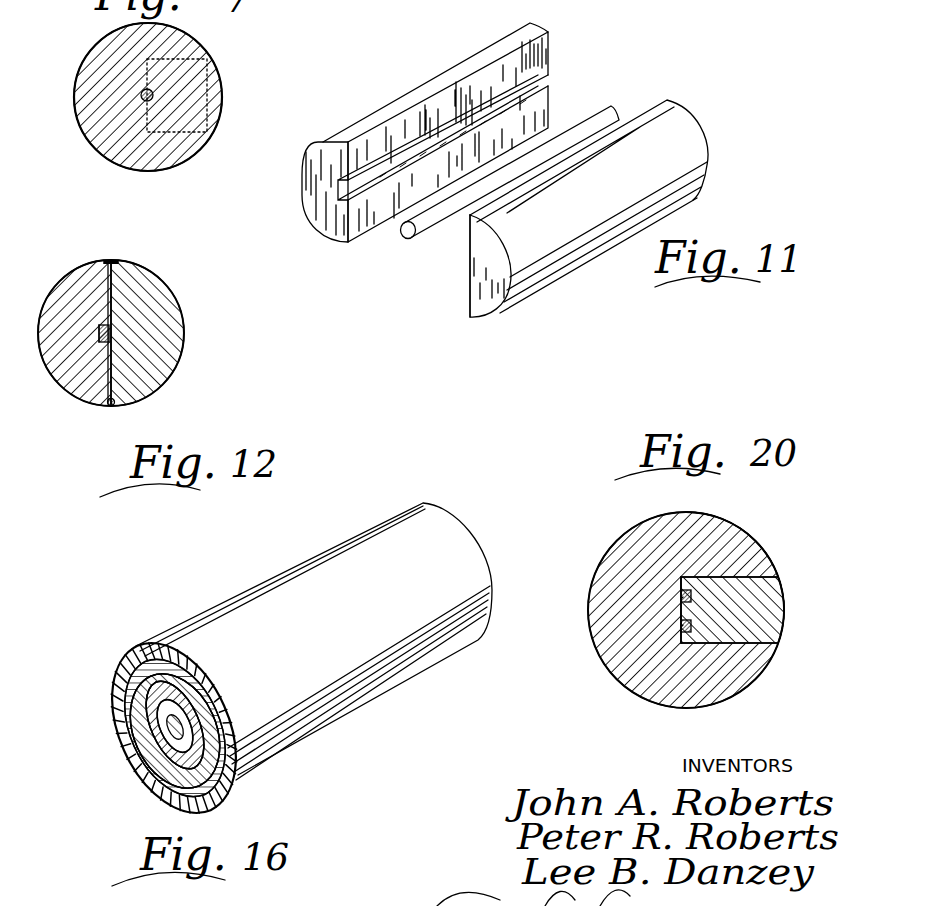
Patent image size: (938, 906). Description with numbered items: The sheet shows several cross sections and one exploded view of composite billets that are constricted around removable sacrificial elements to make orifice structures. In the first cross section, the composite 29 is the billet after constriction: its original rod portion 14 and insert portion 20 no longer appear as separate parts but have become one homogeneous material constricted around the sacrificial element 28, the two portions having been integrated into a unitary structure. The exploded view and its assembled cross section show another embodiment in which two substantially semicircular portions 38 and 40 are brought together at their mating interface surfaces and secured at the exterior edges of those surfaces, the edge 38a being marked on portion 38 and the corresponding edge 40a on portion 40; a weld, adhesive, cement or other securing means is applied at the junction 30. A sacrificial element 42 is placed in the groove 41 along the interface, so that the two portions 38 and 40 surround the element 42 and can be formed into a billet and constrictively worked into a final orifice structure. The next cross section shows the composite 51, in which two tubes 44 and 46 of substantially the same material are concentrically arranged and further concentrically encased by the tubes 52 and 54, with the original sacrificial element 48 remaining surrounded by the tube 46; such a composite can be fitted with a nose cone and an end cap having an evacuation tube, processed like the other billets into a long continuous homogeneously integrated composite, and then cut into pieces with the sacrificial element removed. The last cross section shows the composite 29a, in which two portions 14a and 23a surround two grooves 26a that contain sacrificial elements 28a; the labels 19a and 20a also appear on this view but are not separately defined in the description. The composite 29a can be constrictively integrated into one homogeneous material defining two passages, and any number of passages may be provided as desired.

In FIG. 7, the rod portion 14 is at (107, 147).
In FIG. 7, the insert portion 20 is at (205, 117).
In FIG. 7, the sacrificial element 28 is at (149, 90).
In FIG. 7, the composite 29 is at (120, 63).
In FIG. 12, the junction 30 is at (111, 262).
In FIG. 12, the semicircular portion 38 is at (72, 373).
In FIG. 11, the semicircular portion 38 is at (318, 168).
In FIG. 12, the exterior edge 38a is at (103, 262).
In FIG. 11, the exterior edge 38a is at (550, 33).
In FIG. 12, the semicircular portion 40 is at (170, 312).
In FIG. 11, the semicircular portion 40 is at (502, 297).
In FIG. 12, the flat face of segment 40 40a is at (115, 262).
In FIG. 11, the flat face of segment 40 40a is at (668, 100).
In FIG. 12, the groove 41 is at (100, 330).
In FIG. 11, the groove 41 is at (543, 84).
In FIG. 12, the sacrificial element 42 is at (112, 336).
In FIG. 11, the sacrificial element 42 is at (614, 112).
In FIG. 16, the tube 44 is at (130, 710).
In FIG. 16, the tube 46 is at (140, 737).
In FIG. 16, the sacrificial element 48 is at (150, 757).
In FIG. 16, the composite 51 is at (355, 558).
In FIG. 16, the tube 52 is at (138, 677).
In FIG. 16, the tube 54 is at (150, 652).
In FIG. 20, the portion 14a is at (737, 545).
In FIG. 20, the cylindrical body 19a is at (641, 521).
In FIG. 20, the channel region 20a is at (765, 631).
In FIG. 20, the portion 23a is at (786, 613).
In FIG. 20, the groove 26a is at (690, 597).
In FIG. 20, the sacrificial element 28a is at (683, 625).
In FIG. 20, the composite 29a is at (617, 545).